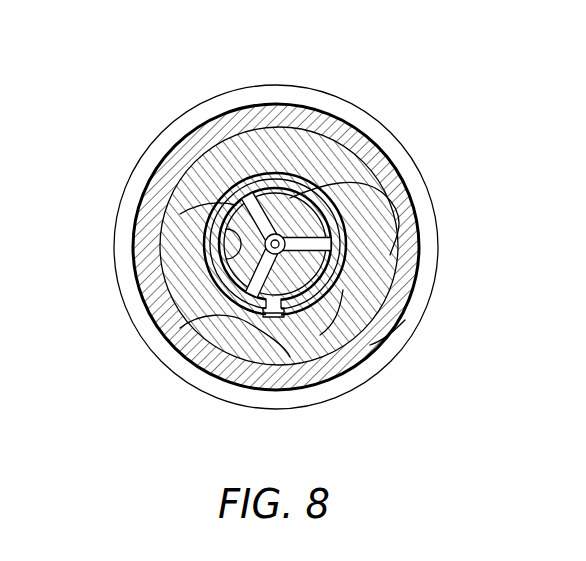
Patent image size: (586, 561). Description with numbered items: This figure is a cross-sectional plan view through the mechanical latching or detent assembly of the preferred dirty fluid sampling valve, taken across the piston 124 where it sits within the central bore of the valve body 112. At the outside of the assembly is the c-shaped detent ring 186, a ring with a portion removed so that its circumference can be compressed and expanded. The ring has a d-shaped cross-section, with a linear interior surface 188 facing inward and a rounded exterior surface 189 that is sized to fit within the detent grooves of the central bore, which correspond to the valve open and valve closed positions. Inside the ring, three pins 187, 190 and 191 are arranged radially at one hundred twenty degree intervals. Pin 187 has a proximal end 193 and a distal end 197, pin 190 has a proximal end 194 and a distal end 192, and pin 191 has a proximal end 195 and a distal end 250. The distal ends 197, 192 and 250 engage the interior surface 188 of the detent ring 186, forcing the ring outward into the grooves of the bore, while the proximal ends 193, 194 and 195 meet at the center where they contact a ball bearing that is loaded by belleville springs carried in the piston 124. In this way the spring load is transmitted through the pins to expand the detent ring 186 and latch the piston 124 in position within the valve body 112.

The valve body 112 is at (415, 205).
The piston 124 is at (367, 130).
The c-shaped detent ring 186 is at (400, 210).
The pin 187 is at (262, 130).
The linear interior surface 188 is at (205, 258).
The rounded exterior surface 189 is at (308, 168).
The pin 190 is at (405, 320).
The pin 191 is at (275, 317).
The distal end 192 is at (390, 253).
The proximal end 193 is at (180, 214).
The proximal end 194 is at (343, 290).
The proximal end 195 is at (223, 280).
The distal end 197 is at (235, 167).
The distal end 250 is at (168, 342).